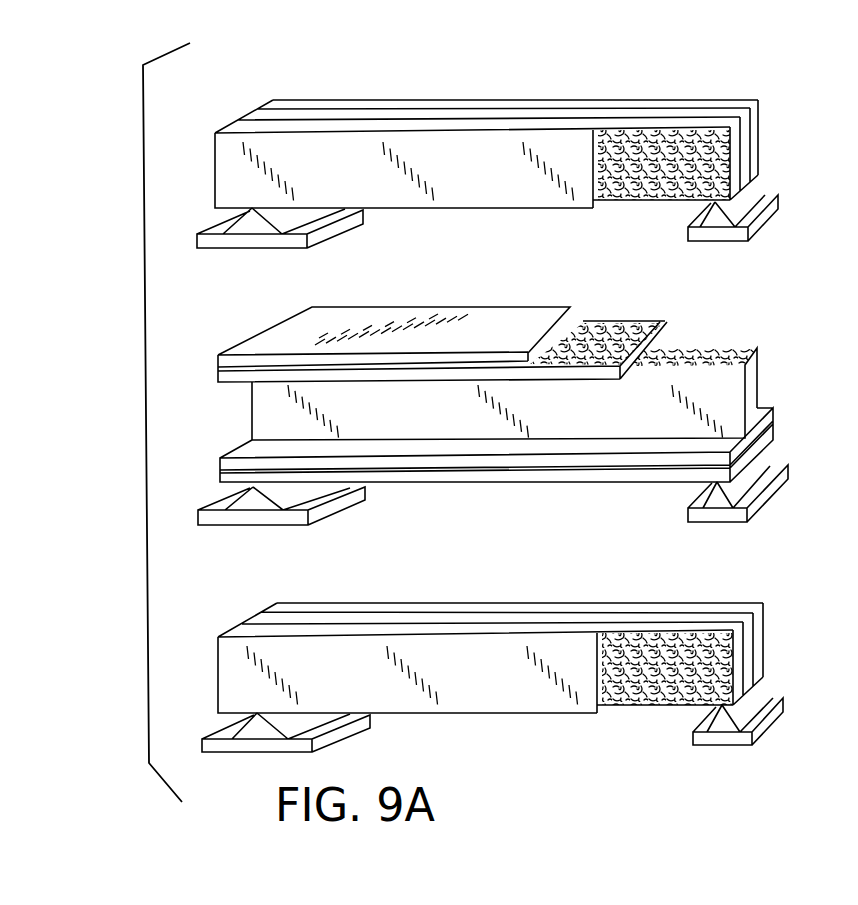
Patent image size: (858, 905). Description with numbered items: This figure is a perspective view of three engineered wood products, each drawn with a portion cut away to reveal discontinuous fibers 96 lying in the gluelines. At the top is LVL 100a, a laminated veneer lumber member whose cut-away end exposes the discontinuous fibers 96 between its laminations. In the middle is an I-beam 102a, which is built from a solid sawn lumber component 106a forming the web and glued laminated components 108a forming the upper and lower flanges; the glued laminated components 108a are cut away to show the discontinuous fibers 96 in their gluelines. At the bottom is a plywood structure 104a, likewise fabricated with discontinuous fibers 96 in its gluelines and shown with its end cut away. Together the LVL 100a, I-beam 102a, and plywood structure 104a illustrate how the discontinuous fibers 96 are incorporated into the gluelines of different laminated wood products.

The discontinuous fibers 96 is at (700, 135).
The LVL 100a is at (573, 85).
The I-beam 102a is at (494, 401).
The plywood structure 104a is at (688, 588).
The solid sawn lumber component 106a is at (753, 380).
The glued laminated component 108a is at (208, 357).